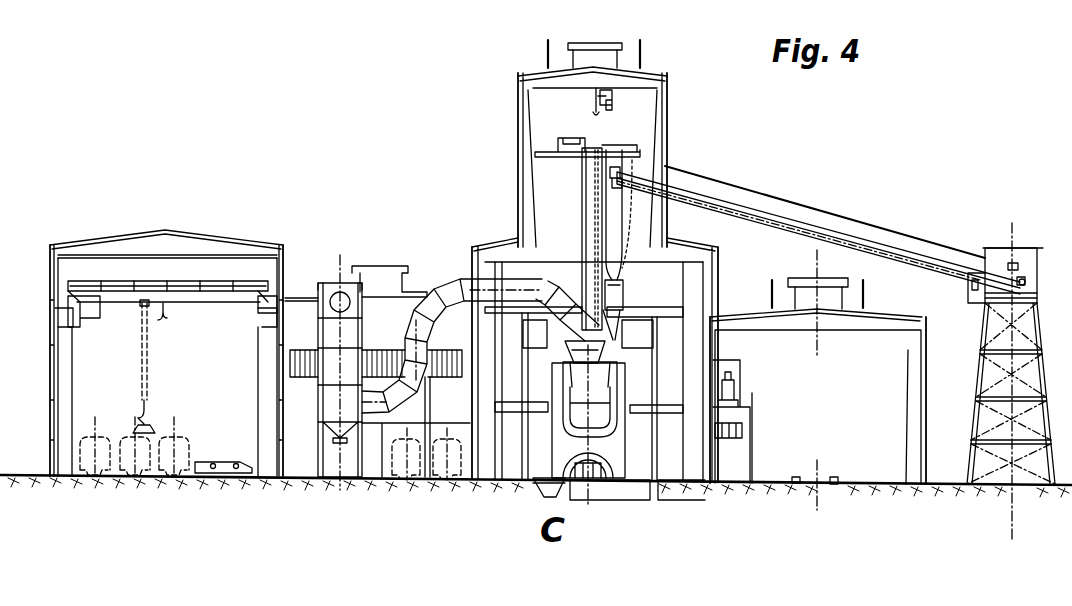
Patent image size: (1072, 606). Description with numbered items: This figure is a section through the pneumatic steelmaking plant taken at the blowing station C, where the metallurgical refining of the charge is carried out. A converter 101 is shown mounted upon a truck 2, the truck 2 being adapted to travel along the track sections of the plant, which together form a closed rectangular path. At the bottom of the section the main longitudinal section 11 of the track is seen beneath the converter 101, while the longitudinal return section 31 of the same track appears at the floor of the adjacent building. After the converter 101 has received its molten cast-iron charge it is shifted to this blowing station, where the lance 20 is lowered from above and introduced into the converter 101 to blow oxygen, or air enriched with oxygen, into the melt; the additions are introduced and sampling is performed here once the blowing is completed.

The truck 2 is at (603, 464).
The main longitudinal section 11 is at (607, 481).
The lance 20 is at (588, 223).
The longitudinal return section 31 is at (835, 486).
The converter 101 is at (610, 397).